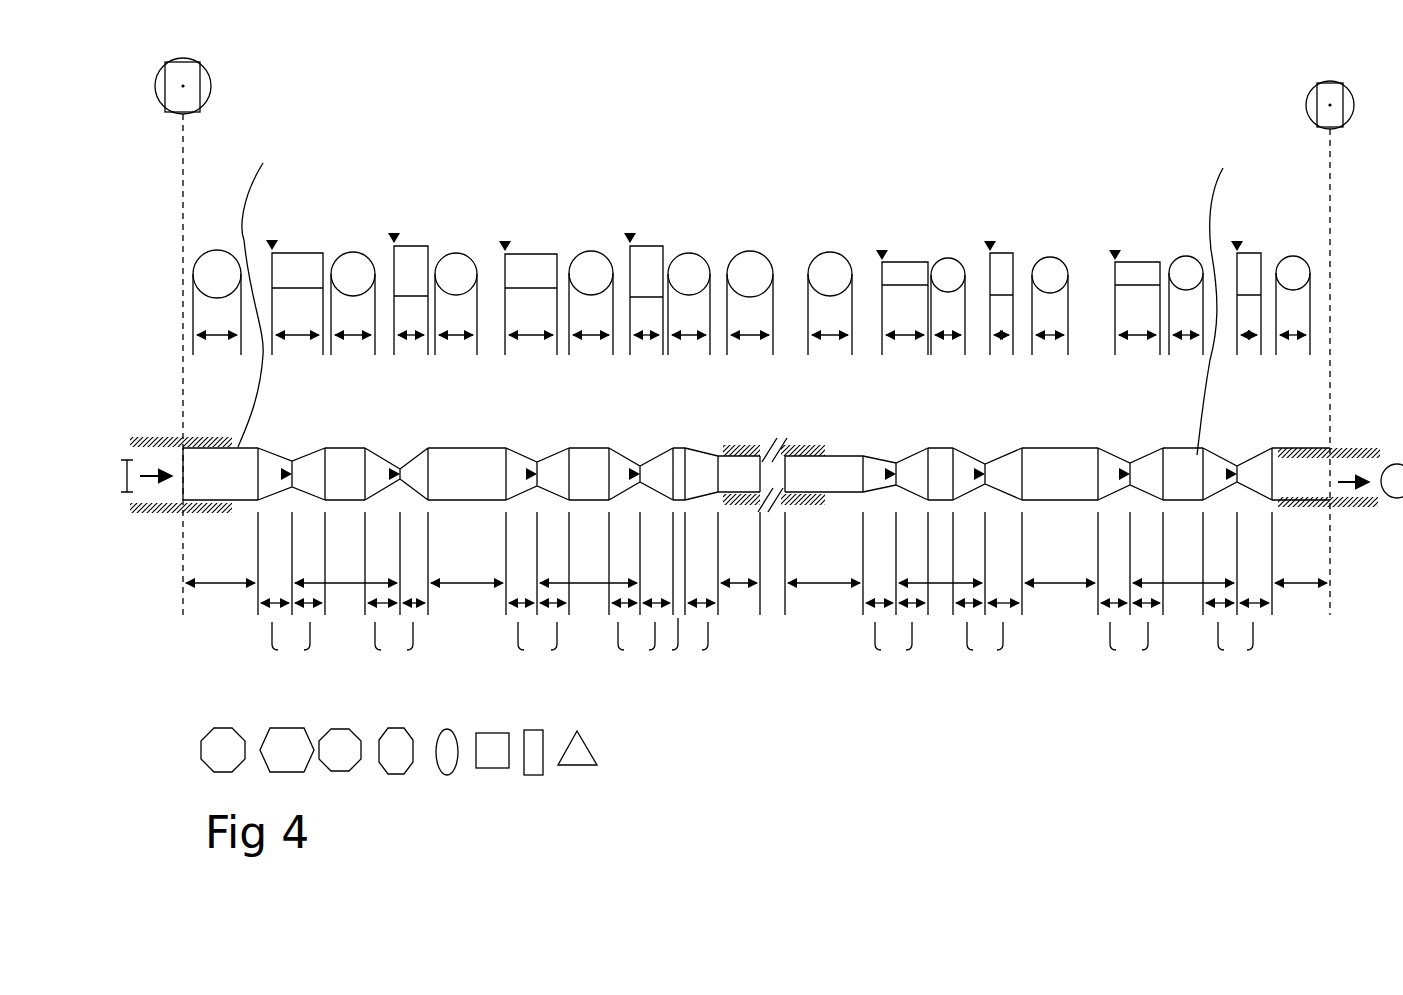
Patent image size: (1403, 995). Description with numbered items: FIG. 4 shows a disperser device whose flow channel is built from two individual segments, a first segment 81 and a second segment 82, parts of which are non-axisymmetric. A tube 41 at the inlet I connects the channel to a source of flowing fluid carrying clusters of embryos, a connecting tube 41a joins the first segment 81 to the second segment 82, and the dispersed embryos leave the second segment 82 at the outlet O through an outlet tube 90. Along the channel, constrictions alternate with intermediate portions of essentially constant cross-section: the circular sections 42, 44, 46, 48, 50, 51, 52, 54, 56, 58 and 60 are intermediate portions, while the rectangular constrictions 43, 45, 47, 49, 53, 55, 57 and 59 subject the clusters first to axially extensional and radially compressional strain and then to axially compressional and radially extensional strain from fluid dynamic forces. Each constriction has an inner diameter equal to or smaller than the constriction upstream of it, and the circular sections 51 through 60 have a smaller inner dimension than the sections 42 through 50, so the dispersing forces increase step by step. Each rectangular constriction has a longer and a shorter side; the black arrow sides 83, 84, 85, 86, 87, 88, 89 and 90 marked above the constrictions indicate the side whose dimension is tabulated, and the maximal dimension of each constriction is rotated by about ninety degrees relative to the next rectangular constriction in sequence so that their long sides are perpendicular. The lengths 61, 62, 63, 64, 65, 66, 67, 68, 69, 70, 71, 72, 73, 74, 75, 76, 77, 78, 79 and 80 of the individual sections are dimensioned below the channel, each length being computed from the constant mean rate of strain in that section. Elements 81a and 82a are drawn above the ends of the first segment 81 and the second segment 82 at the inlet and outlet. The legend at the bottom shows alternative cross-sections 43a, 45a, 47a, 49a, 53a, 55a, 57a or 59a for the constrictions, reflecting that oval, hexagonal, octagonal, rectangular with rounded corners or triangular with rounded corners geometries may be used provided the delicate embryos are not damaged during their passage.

The tube 41 is at (198, 446).
The connecting tube 41a is at (744, 450).
The circular flow channel section 42 is at (184, 476).
The rectangular constriction 43 is at (294, 462).
The circular flow channel section 44 is at (328, 478).
The rectangular constriction 45 is at (404, 470).
The circular flow channel section 46 is at (431, 478).
The rectangular constriction 47 is at (539, 462).
The circular flow channel section 48 is at (572, 478).
The rectangular constriction 49 is at (640, 478).
The circular flow channel section 50 is at (680, 475).
The circular flow channel section 51 is at (722, 470).
The circular flow channel section 52 is at (860, 477).
The rectangular constriction 53 is at (899, 464).
The circular flow channel section 54 is at (950, 477).
The rectangular constriction 55 is at (995, 475).
The circular flow channel section 56 is at (1026, 478).
The rectangular constriction 57 is at (1133, 464).
The circular flow channel section 58 is at (1166, 480).
The rectangular constriction 59 is at (1242, 475).
The circular flow channel section 60 is at (1276, 478).
The section length 61 is at (220, 570).
The section length 62 is at (291, 643).
The section length 63 is at (346, 570).
The section length 64 is at (396, 643).
The section length 65 is at (467, 570).
The section length 66 is at (537, 643).
The section length 67 is at (588, 570).
The section length 68 is at (633, 643).
The section length 69 is at (663, 643).
The section length 70 is at (702, 643).
The section length 71 is at (739, 570).
The section length 72 is at (824, 570).
The section length 73 is at (895, 644).
The section length 74 is at (940, 570).
The section length 75 is at (987, 644).
The section length 76 is at (1060, 570).
The section length 77 is at (1130, 644).
The section length 78 is at (1183, 570).
The section length 79 is at (1237, 644).
The section length 80 is at (1301, 570).
The first segment 81 is at (267, 294).
The inlet detector 81a is at (210, 75).
The second segment 82 is at (1227, 304).
The outlet detector 82a is at (1306, 104).
The black arrow side 83 is at (272, 225).
The black arrow side 84 is at (396, 221).
The black arrow side 85 is at (506, 225).
The black arrow side 86 is at (628, 221).
The black arrow side 87 is at (880, 230).
The black arrow side 88 is at (990, 225).
The black arrow side 89 is at (1113, 230).
The outlet tube 90 is at (1297, 458).
The cross-sectional shape of constriction 43a is at (701, 751).
The cross-sectional shape of constriction 45a is at (701, 751).
The cross-sectional shape of constriction 47a is at (701, 751).
The cross-sectional shape of constriction 49a is at (701, 751).
The cross-sectional shape of constriction 53a is at (701, 751).
The cross-sectional shape of constriction 55a is at (701, 751).
The cross-sectional shape of constriction 57a is at (701, 751).
The cross-sectional shape of constriction 59a is at (597, 750).